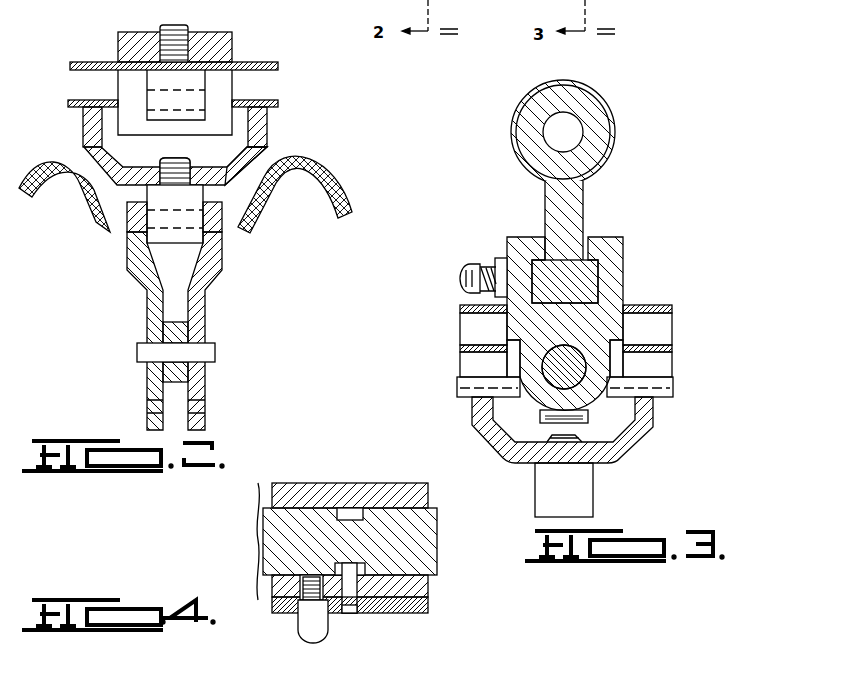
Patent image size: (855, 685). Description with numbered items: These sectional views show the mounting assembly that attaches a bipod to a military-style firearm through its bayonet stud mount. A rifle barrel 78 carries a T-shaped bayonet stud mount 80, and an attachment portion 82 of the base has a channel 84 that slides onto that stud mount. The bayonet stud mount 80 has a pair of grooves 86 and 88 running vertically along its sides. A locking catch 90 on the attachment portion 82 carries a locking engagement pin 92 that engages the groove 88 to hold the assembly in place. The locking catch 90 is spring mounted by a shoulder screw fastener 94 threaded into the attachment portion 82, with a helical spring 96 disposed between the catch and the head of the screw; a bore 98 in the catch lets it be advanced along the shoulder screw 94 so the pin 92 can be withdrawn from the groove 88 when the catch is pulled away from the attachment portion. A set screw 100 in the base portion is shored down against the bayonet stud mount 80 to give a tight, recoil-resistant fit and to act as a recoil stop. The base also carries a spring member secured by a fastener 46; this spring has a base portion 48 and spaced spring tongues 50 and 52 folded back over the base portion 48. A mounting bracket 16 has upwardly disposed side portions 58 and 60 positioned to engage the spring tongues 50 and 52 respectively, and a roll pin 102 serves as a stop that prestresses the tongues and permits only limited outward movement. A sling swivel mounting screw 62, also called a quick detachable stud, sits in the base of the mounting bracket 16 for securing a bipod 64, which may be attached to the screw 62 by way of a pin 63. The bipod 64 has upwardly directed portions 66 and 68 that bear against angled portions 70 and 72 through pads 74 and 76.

In FIG. 3, the mounting bracket 16 is at (652, 440).
In FIG. 2, the fastener 46 is at (200, 95).
In FIG. 2, the base portion 48 is at (200, 63).
In FIG. 3, the base portion 48 is at (460, 309).
In FIG. 2, the spring tongue 50 is at (70, 101).
In FIG. 3, the spring tongue 50 is at (460, 349).
In FIG. 2, the spring tongue 52 is at (280, 104).
In FIG. 3, the spring tongue 52 is at (673, 350).
In FIG. 2, the side portion 58 is at (84, 118).
In FIG. 2, the side portion 60 is at (266, 118).
In FIG. 2, the sling swivel mounting screw 62 is at (157, 237).
In FIG. 3, the sling swivel mounting screw 62 is at (581, 492).
In FIG. 2, the pin 63 is at (233, 220).
In FIG. 2, the bipod 64 is at (208, 290).
In FIG. 2, the upwardly directed portion 66 is at (224, 215).
In FIG. 2, the upwardly directed portion 68 is at (100, 205).
In FIG. 2, the angled portion 70 is at (92, 150).
In FIG. 2, the angled portion 72 is at (265, 148).
In FIG. 2, the pad 74 is at (258, 170).
In FIG. 2, the pad 76 is at (94, 176).
In FIG. 3, the rifle barrel 78 is at (600, 130).
In FIG. 3, the bayonet stud mount 80 is at (576, 204).
In FIG. 4, the bayonet stud mount 80 is at (438, 528).
In FIG. 3, the attachment portion 82 is at (627, 291).
In FIG. 4, the attachment portion 82 is at (440, 588).
In FIG. 3, the channel 84 is at (592, 278).
In FIG. 4, the groove 86 is at (351, 508).
In FIG. 4, the groove 88 is at (358, 570).
In FIG. 3, the locking catch 90 is at (498, 258).
In FIG. 4, the locking catch 90 is at (430, 612).
In FIG. 4, the locking engagement pin 92 is at (358, 613).
In FIG. 3, the shoulder screw fastener 94 is at (462, 277).
In FIG. 4, the shoulder screw fastener 94 is at (305, 636).
In FIG. 3, the helical spring 96 is at (488, 270).
In FIG. 4, the helical spring 96 is at (297, 622).
In FIG. 4, the bore 98 is at (300, 598).
In FIG. 3, the set screw 100 is at (540, 418).
In FIG. 3, the roll pin 102 is at (457, 386).